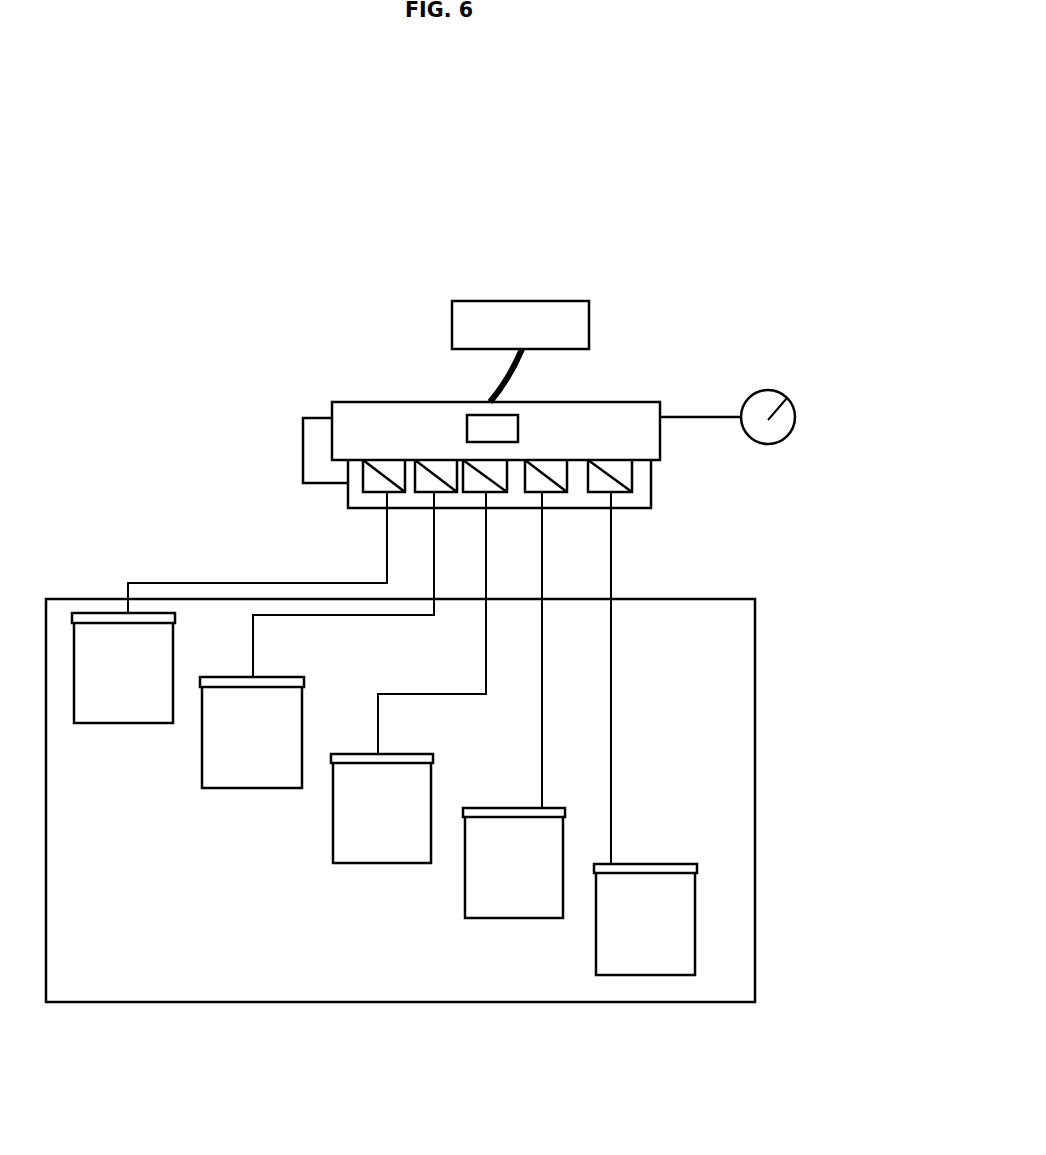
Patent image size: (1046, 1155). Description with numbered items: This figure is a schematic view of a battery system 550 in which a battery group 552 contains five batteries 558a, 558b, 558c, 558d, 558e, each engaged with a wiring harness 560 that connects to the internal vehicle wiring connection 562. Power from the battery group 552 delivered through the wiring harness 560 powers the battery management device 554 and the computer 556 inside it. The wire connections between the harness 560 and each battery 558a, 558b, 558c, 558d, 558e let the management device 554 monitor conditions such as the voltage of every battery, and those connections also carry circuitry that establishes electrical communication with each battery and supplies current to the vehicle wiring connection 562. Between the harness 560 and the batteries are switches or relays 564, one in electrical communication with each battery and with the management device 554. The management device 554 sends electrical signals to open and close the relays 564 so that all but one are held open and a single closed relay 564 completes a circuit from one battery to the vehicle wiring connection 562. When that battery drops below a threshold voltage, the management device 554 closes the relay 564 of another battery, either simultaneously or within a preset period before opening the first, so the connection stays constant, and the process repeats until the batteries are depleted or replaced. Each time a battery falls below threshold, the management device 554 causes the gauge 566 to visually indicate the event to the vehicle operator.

The system 550 is at (670, 182).
The battery group 552 is at (167, 962).
The battery management device 554 is at (638, 402).
The computer 556 is at (470, 432).
The battery 558a is at (148, 677).
The battery 558b is at (280, 741).
The battery 558c is at (410, 820).
The battery 558d is at (543, 878).
The battery 558e is at (672, 933).
The wiring harness 560 is at (648, 477).
The internal vehicle wiring connection 562 is at (497, 312).
The relay 564 is at (373, 482).
The gauge 566 is at (793, 430).